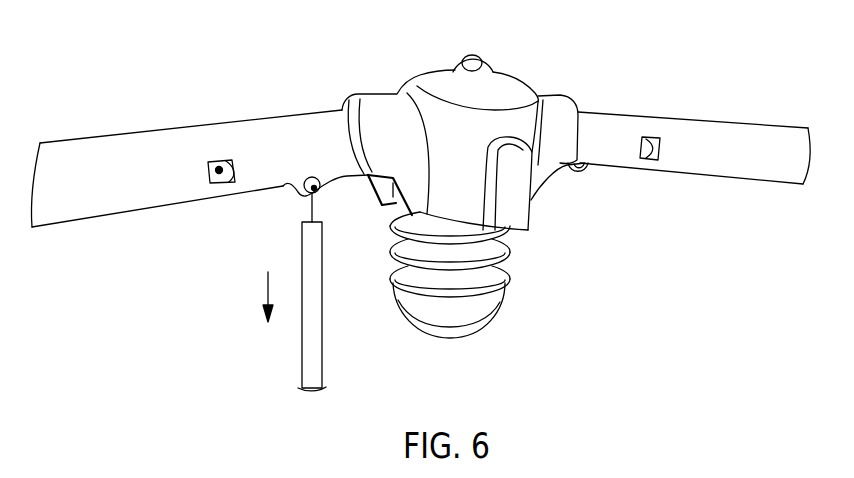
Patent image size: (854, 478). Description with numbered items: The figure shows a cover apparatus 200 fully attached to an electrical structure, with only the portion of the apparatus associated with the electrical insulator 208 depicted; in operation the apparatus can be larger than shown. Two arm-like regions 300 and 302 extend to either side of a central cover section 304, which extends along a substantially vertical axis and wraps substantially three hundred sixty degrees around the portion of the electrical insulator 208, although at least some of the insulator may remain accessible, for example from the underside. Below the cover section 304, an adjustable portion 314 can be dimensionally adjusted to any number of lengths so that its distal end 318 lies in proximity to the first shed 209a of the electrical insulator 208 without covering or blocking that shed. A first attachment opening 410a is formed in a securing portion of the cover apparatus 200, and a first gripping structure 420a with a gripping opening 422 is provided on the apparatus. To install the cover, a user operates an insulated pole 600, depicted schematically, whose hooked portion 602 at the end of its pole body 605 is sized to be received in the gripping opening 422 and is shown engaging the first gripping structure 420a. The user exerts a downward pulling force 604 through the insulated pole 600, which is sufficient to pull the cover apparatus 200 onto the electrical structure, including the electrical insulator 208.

The cover apparatus 200 is at (93, 104).
The first arm 300 is at (143, 132).
The second arm 302 is at (593, 112).
The cover section 304 is at (513, 90).
The adjustable portion 314 is at (518, 194).
The distal end 318 is at (527, 232).
The electrical insulator 208 is at (510, 268).
The first shed 209a is at (392, 222).
The first attachment opening 410a is at (222, 164).
The first gripping structure 420a is at (290, 190).
The gripping opening 422 is at (330, 187).
The insulated pole 600 is at (284, 269).
The hooked portion 602 is at (306, 208).
The pulling force 604 is at (267, 288).
The pole body 605 is at (323, 328).